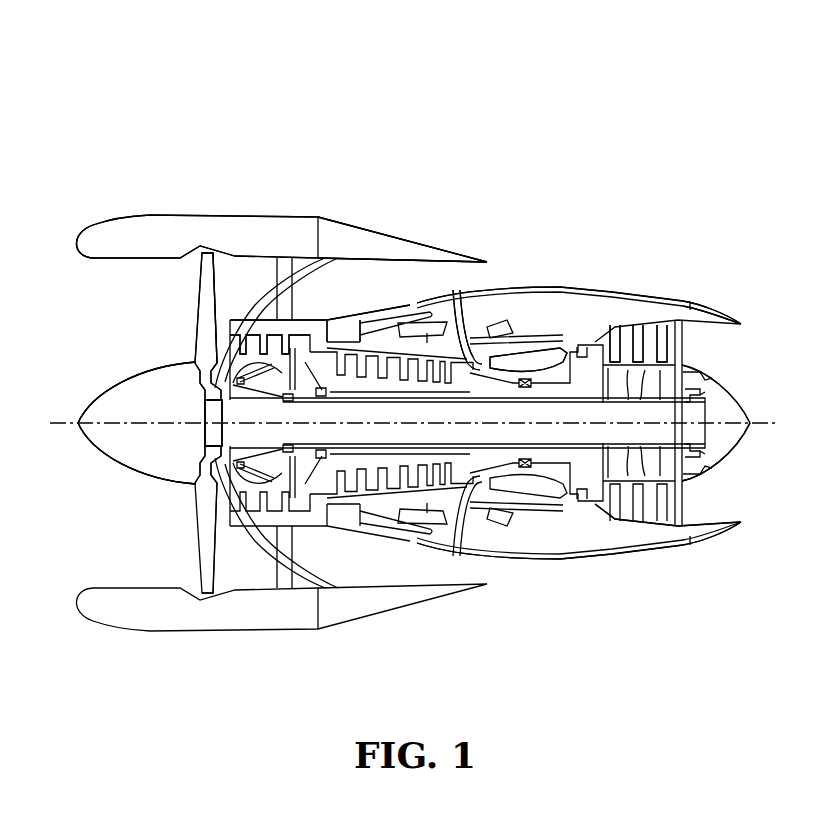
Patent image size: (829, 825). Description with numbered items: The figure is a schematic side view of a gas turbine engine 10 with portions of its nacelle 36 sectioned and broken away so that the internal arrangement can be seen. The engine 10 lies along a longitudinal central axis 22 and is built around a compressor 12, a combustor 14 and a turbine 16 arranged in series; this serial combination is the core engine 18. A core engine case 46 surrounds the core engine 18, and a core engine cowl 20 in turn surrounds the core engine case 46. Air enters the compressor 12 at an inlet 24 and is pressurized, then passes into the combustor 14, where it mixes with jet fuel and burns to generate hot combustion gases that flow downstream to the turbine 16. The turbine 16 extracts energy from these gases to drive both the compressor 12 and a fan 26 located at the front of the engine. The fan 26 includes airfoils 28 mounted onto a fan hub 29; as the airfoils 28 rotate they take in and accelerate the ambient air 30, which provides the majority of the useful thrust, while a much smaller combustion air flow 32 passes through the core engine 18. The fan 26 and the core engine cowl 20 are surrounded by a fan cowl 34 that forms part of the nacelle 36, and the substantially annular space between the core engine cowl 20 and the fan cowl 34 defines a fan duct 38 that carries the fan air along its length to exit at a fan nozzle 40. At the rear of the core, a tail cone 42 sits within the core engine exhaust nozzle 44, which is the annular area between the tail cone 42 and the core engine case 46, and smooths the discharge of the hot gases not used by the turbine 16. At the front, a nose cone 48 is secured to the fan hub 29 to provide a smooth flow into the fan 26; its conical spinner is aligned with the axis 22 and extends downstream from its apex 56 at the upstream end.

The gas turbine engine 10 is at (590, 107).
The compressor 12 is at (290, 352).
The combustor 14 is at (530, 360).
The turbine 16 is at (623, 338).
The core engine 18 is at (585, 313).
The core engine cowl 20 is at (612, 553).
The longitudinal central axis 22 is at (750, 423).
The inlet 24 is at (230, 321).
The fan 26 is at (130, 478).
The airfoils 28 is at (201, 271).
The fan hub 29 is at (213, 413).
The ambient air 30 is at (197, 297).
The combustion air flow 32 is at (221, 508).
The fan cowl 34 is at (373, 259).
The nacelle 36 is at (215, 215).
The fan duct 38 is at (378, 299).
The fan nozzle 40 is at (500, 278).
The tail cone 42 is at (733, 450).
The core engine exhaust nozzle 44 is at (720, 350).
The core engine case 46 is at (562, 513).
The nose cone 48 is at (108, 398).
The apex 56 is at (82, 427).